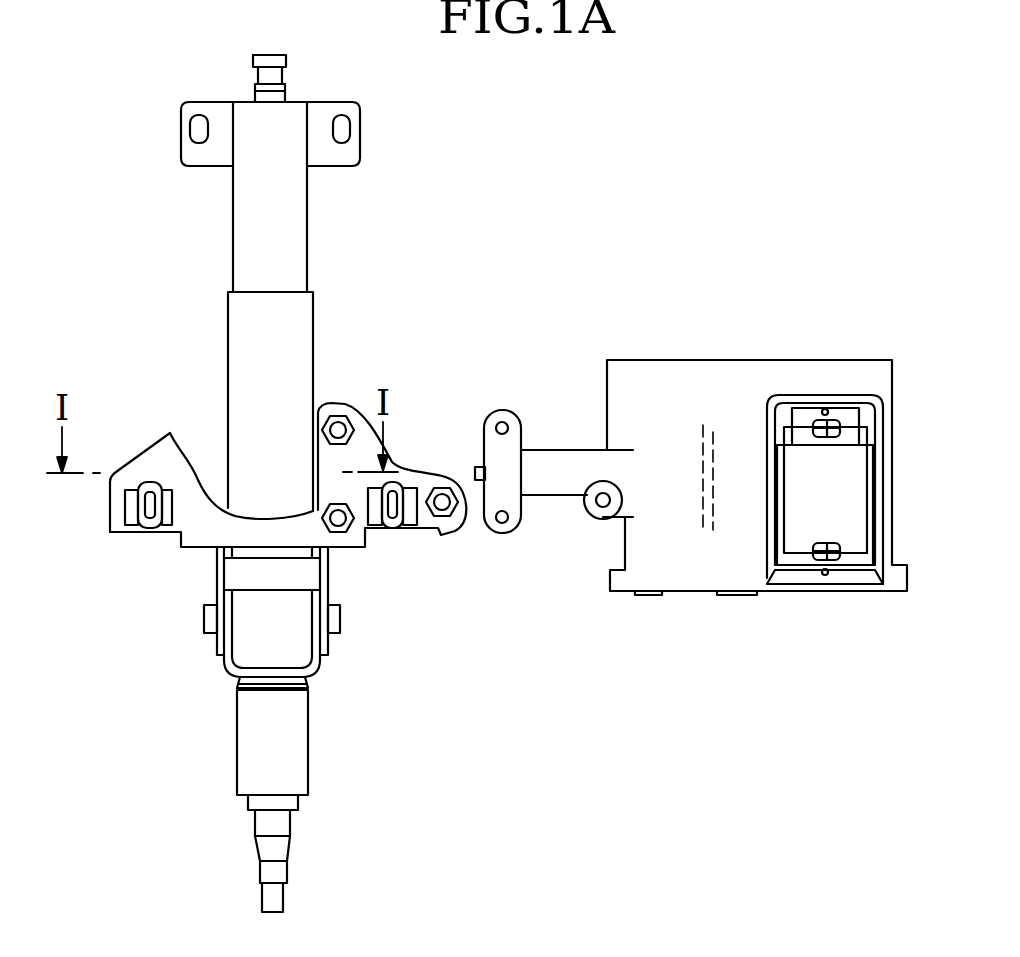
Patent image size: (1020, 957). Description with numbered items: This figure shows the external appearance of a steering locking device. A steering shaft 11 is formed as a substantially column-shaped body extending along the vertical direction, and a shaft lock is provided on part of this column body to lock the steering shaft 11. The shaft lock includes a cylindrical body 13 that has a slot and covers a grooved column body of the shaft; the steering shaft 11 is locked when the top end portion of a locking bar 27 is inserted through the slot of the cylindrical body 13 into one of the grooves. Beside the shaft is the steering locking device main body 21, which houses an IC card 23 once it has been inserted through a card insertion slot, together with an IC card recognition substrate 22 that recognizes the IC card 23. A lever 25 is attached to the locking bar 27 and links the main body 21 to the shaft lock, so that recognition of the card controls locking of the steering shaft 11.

The steering shaft 11 is at (310, 740).
The cylindrical body 13 is at (228, 428).
The steering locking device main body 21 is at (858, 360).
The IC card recognition substrate 22 is at (783, 395).
The IC card 23 is at (815, 407).
The lever 25 is at (518, 412).
The locking bar 27 is at (473, 470).